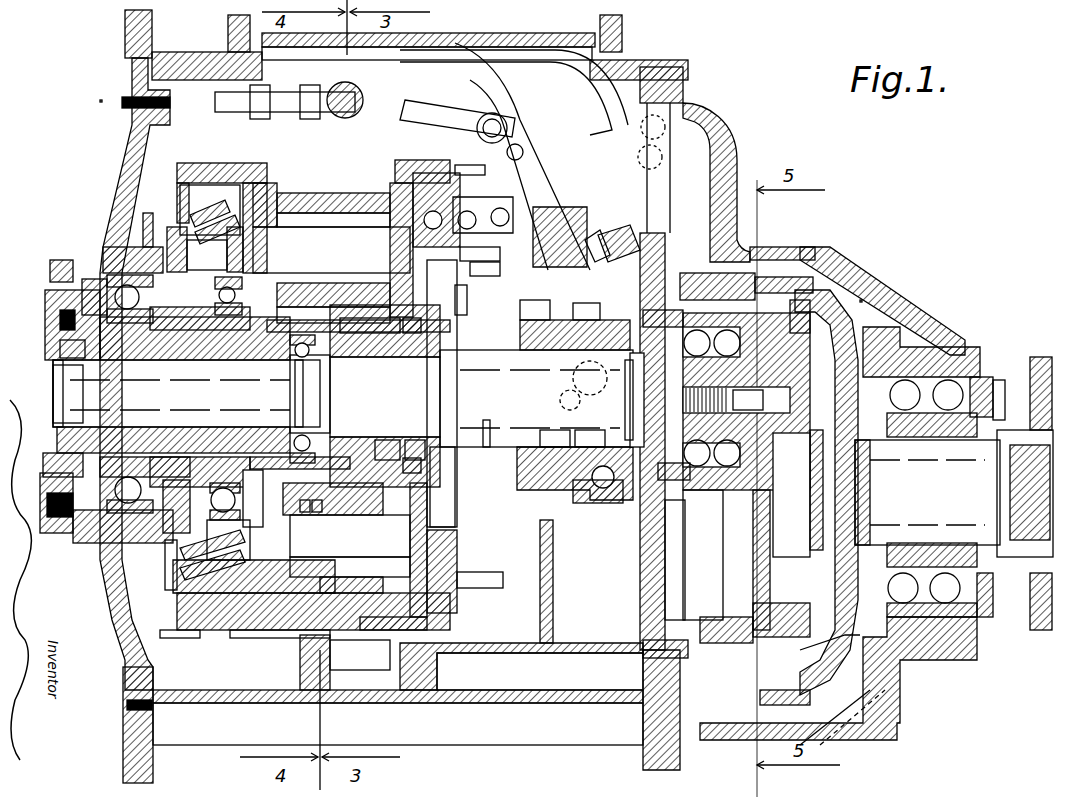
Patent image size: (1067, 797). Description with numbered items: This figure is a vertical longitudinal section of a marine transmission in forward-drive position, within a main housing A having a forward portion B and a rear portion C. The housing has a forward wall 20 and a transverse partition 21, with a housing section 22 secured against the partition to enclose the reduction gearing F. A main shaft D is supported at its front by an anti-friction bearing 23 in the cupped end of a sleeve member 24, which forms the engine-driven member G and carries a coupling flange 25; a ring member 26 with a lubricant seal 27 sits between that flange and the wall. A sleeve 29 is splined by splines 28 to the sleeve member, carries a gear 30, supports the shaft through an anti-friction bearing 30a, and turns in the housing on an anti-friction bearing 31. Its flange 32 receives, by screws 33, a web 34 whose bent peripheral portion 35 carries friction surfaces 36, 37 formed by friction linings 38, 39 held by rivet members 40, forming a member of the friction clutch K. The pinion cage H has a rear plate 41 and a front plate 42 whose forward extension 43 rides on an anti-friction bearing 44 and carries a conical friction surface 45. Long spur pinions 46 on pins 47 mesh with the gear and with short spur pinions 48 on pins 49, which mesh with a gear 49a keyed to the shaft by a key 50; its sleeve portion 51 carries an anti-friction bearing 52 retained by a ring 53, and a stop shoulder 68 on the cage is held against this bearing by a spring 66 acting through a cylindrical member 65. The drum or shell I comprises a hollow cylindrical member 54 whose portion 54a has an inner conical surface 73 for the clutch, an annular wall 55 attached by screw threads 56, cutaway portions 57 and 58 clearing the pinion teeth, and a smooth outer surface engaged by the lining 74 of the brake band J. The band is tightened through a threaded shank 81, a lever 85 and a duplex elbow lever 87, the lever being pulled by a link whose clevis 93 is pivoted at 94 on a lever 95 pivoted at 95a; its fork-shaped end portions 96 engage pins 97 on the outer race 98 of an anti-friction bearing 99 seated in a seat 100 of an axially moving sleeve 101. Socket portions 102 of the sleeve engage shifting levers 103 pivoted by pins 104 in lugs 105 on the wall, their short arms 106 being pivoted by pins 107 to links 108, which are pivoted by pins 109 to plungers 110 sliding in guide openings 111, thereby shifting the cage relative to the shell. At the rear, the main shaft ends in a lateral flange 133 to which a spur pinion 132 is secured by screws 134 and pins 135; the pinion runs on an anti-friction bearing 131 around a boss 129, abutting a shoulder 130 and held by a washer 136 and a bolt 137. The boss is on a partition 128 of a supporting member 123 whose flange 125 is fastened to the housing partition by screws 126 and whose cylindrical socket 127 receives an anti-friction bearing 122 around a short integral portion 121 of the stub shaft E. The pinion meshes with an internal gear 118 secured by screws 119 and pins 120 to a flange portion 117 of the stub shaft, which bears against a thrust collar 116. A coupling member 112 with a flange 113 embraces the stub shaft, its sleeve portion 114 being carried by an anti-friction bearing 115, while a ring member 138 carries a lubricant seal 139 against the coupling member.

The casing wall 20 is at (125, 157).
The casing section A is at (125, 150).
The bolt 87 is at (235, 70).
The casing section B is at (635, 100).
The pocket 21 is at (680, 245).
The cover 22 is at (870, 295).
The cover C is at (845, 300).
The plate 120 is at (800, 277).
The partition wall 133 is at (650, 501).
The flange 135 is at (663, 308).
The chamber 125 is at (650, 665).
The bolt 126 is at (648, 645).
The wall 123 is at (665, 600).
The rib 56 is at (460, 622).
The fork 55 is at (450, 540).
The rod 81 is at (420, 85).
The lever 95 is at (545, 175).
The lever pin 95a is at (612, 238).
The arm 93 is at (462, 115).
The hub 94 is at (494, 113).
The pin 105 is at (518, 160).
The shaft 85 is at (215, 100).
The block 108 is at (448, 210).
The link 106 is at (483, 205).
The link 107 is at (480, 260).
The pin 109 is at (487, 278).
The pin 111 is at (471, 300).
The arm 104 is at (560, 210).
The block 103 is at (520, 325).
The block 102 is at (515, 321).
The pin 110 is at (471, 163).
The plate 57 is at (420, 163).
The clutch plate 42 is at (258, 185).
The clutch J is at (275, 140).
The ring 36 is at (182, 183).
The roller 35 is at (205, 210).
The roller 38 is at (215, 220).
The ring 37 is at (197, 249).
The ring 39 is at (229, 249).
The hub 40 is at (267, 224).
The gear 46 is at (310, 213).
The gear 47 is at (338, 283).
The web 41 is at (399, 250).
The shaft 28 is at (236, 440).
The shaft 29 is at (217, 345).
The bearing 30 is at (280, 345).
The sleeve 30a is at (297, 425).
The ball bearing 31 is at (128, 325).
The bearing 32 is at (162, 330).
The sleeve 33 is at (195, 330).
The housing 34 is at (110, 262).
The flange 26 is at (85, 260).
The bearing housing G is at (47, 305).
The bolt 25 is at (50, 270).
The seal 27 is at (60, 318).
The ring 23 is at (60, 344).
The shaft end 24 is at (75, 370).
The hub 48 is at (352, 440).
The gear 49a is at (370, 354).
The bearing 50 is at (410, 340).
The ring 52 is at (387, 440).
The ring 51 is at (413, 440).
The fork 53 is at (440, 440).
The shaft D is at (485, 425).
The member H is at (455, 485).
The fork 68 is at (455, 505).
The pin 97 is at (570, 380).
The pin 96 is at (562, 397).
The ring 101 is at (545, 447).
The ring 100 is at (580, 447).
The coupling 137 is at (633, 405).
The coupling 136 is at (633, 424).
The ball 98 is at (598, 490).
The race 99 is at (608, 500).
The drum F is at (820, 301).
The drum web 117 is at (830, 345).
The bearing 131 is at (715, 490).
The race 129 is at (737, 490).
The nut 134 is at (672, 480).
The sleeve 132 is at (694, 555).
The web 128 is at (753, 548).
The hub 122 is at (770, 605).
The spline 121 is at (791, 495).
The ring 130 is at (802, 490).
The wall 127 is at (820, 630).
The rib 119 is at (842, 708).
The housing 118 is at (720, 700).
The shaft E is at (927, 492).
The collar 116 is at (868, 492).
The bearing race 114 is at (950, 545).
The ball 115 is at (900, 570).
The bolt 138 is at (978, 345).
The ring 139 is at (998, 378).
The flange 113 is at (1040, 357).
The nut 112 is at (1010, 430).
The gear 49 is at (346, 538).
The ring 65 is at (303, 517).
The ring 66 is at (319, 523).
The base 73 is at (180, 600).
The ring 44 is at (335, 543).
The ring 43 is at (228, 540).
The roller 45 is at (182, 555).
The clutch K is at (167, 586).
The plate 54a is at (180, 637).
The member I is at (215, 640).
The boss 58 is at (321, 662).
The bolt 74 is at (360, 660).
The plate 54 is at (380, 632).